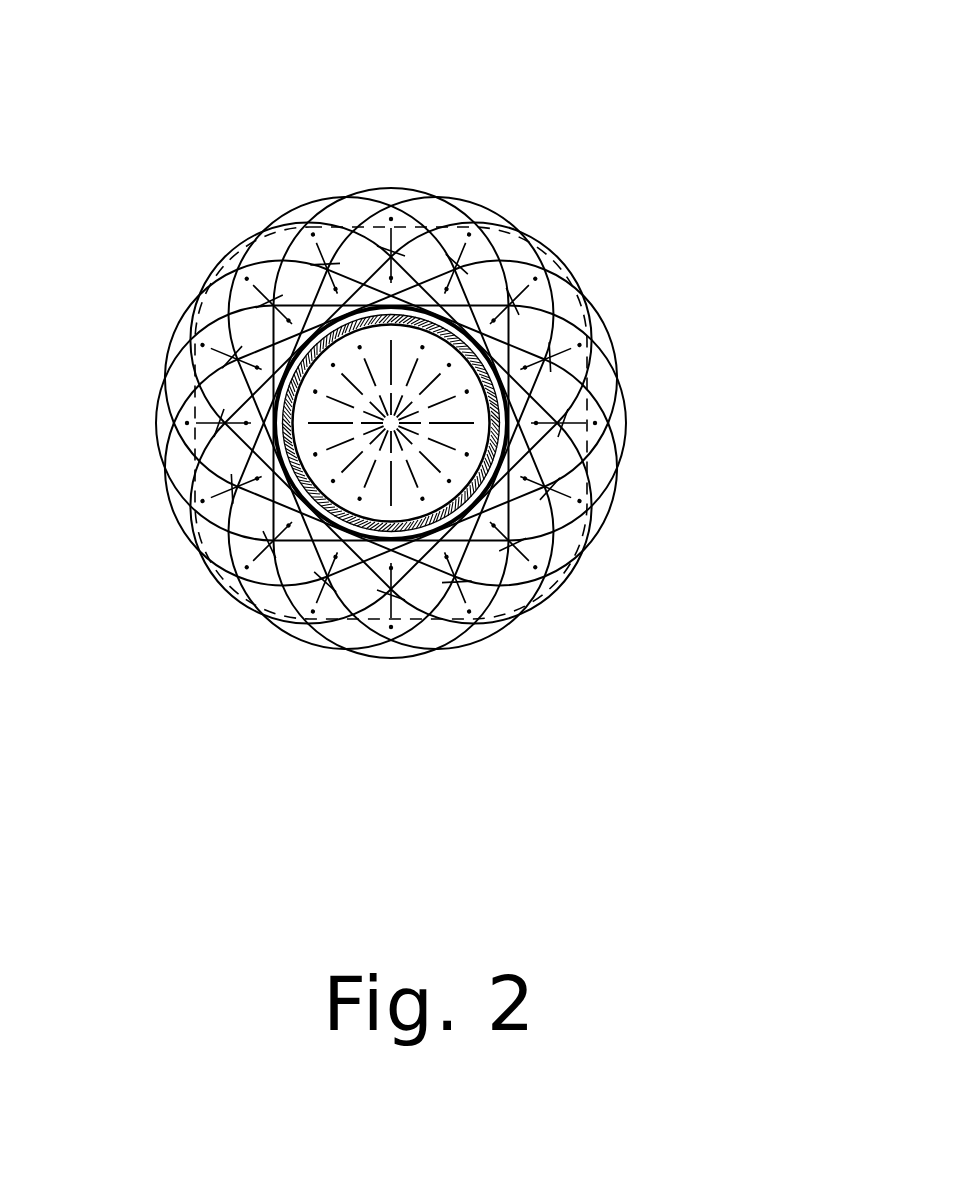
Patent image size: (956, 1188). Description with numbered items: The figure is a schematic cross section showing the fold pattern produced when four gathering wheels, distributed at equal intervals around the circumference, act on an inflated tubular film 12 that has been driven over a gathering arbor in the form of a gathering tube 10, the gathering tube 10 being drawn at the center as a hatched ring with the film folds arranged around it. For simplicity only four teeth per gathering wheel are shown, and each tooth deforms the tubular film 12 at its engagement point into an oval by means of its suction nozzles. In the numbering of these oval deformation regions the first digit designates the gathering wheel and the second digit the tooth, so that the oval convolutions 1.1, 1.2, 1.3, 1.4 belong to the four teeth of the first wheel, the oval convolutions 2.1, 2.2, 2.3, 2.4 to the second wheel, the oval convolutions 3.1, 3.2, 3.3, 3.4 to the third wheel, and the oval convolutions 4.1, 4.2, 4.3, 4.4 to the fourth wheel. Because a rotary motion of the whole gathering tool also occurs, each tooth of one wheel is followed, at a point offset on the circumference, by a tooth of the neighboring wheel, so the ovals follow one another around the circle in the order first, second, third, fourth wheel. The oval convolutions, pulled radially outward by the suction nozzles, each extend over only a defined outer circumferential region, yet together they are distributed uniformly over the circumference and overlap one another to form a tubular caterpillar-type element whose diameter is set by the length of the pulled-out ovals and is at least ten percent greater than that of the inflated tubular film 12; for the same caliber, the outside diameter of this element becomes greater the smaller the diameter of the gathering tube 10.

The gathering tube 10 is at (504, 388).
The tubular film 12 is at (401, 189).
The oval convolution 1.1 is at (391, 189).
The oval convolution 1.2 is at (155, 423).
The oval convolution 1.3 is at (391, 647).
The oval convolution 1.4 is at (613, 423).
The oval convolution 2.1 is at (324, 237).
The oval convolution 2.2 is at (193, 490).
The oval convolution 2.3 is at (459, 604).
The oval convolution 2.4 is at (601, 356).
The oval convolution 3.1 is at (251, 298).
The oval convolution 3.2 is at (256, 549).
The oval convolution 3.3 is at (542, 547).
The oval convolution 3.4 is at (542, 295).
The oval convolution 4.1 is at (187, 356).
The oval convolution 4.2 is at (324, 612).
The oval convolution 4.3 is at (601, 490).
The oval convolution 4.4 is at (462, 231).